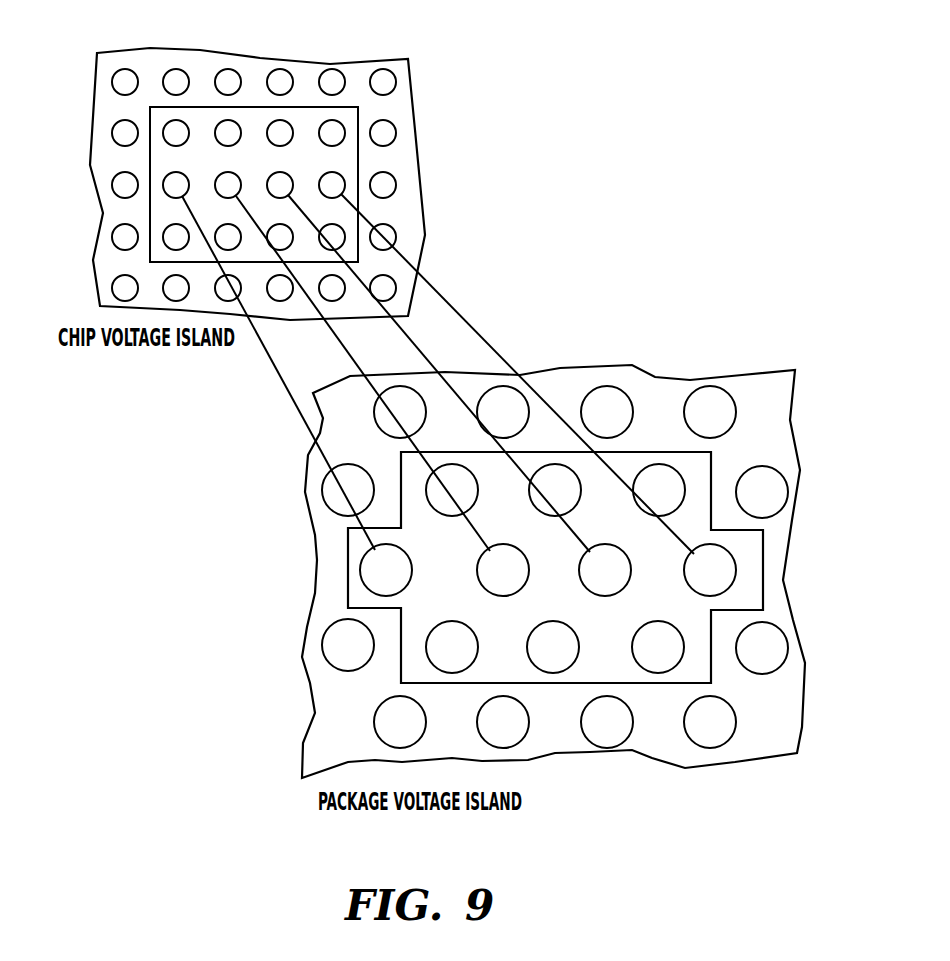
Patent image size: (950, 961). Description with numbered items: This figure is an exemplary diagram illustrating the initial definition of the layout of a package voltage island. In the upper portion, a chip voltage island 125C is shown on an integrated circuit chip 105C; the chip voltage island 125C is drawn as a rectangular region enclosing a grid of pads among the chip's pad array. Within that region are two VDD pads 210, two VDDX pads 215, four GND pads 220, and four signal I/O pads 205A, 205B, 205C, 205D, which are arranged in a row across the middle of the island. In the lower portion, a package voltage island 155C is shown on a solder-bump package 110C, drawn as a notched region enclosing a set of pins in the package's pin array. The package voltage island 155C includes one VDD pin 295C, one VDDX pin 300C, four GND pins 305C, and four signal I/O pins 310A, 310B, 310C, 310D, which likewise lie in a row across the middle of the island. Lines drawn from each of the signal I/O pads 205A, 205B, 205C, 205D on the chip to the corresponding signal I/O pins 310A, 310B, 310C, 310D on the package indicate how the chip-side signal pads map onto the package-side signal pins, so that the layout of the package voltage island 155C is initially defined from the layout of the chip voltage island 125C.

The integrated circuit chip 105C is at (410, 77).
The chip voltage island 125C is at (160, 107).
The GND pads 220 is at (183, 122).
The VDD pads 210 is at (234, 121).
The VDDX pads 215 is at (287, 121).
The signal I/O pad 205A is at (165, 182).
The signal I/O pad 205B is at (215, 183).
The signal I/O pad 205C is at (307, 172).
The signal I/O pad 205D is at (343, 183).
The solder-bump package 110C is at (622, 365).
The package voltage island 155C is at (347, 568).
The GND pins 305C is at (665, 470).
The VDD pin 295C is at (577, 489).
The VDDX pin 300C is at (560, 664).
The signal I/O pin 310A is at (365, 577).
The signal I/O pin 310B is at (480, 572).
The signal I/O pin 310C is at (583, 572).
The signal I/O pin 310D is at (732, 571).